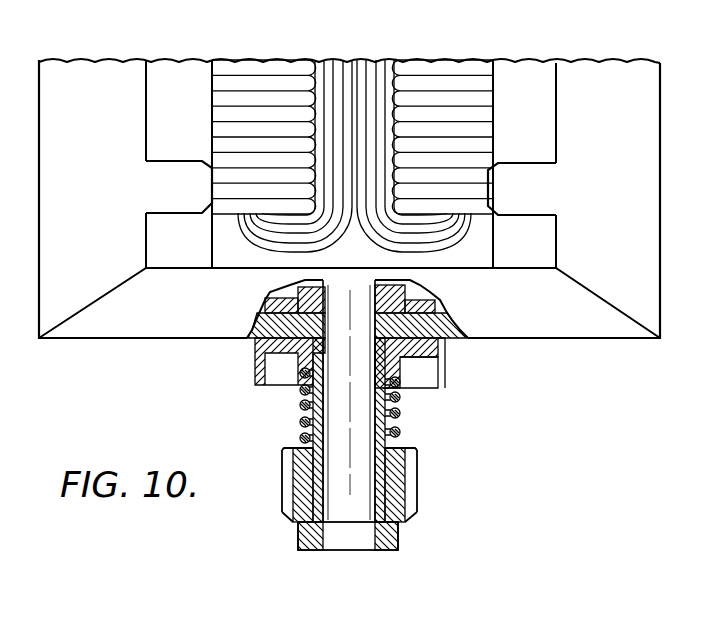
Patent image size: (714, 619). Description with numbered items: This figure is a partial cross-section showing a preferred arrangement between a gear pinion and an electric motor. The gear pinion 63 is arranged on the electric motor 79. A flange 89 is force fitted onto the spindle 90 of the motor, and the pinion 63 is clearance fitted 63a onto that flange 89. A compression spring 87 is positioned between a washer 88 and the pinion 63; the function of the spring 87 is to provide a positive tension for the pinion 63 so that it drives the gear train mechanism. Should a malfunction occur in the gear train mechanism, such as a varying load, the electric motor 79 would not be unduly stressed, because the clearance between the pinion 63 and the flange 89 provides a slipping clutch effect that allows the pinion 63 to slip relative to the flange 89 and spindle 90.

The electric motor 79 is at (589, 342).
The washer 88 is at (265, 355).
The compression spring 87 is at (300, 407).
The gear pinion 63 is at (323, 501).
The clearance fit 63a is at (296, 514).
The flange 89 is at (314, 545).
The spindle 90 is at (372, 482).